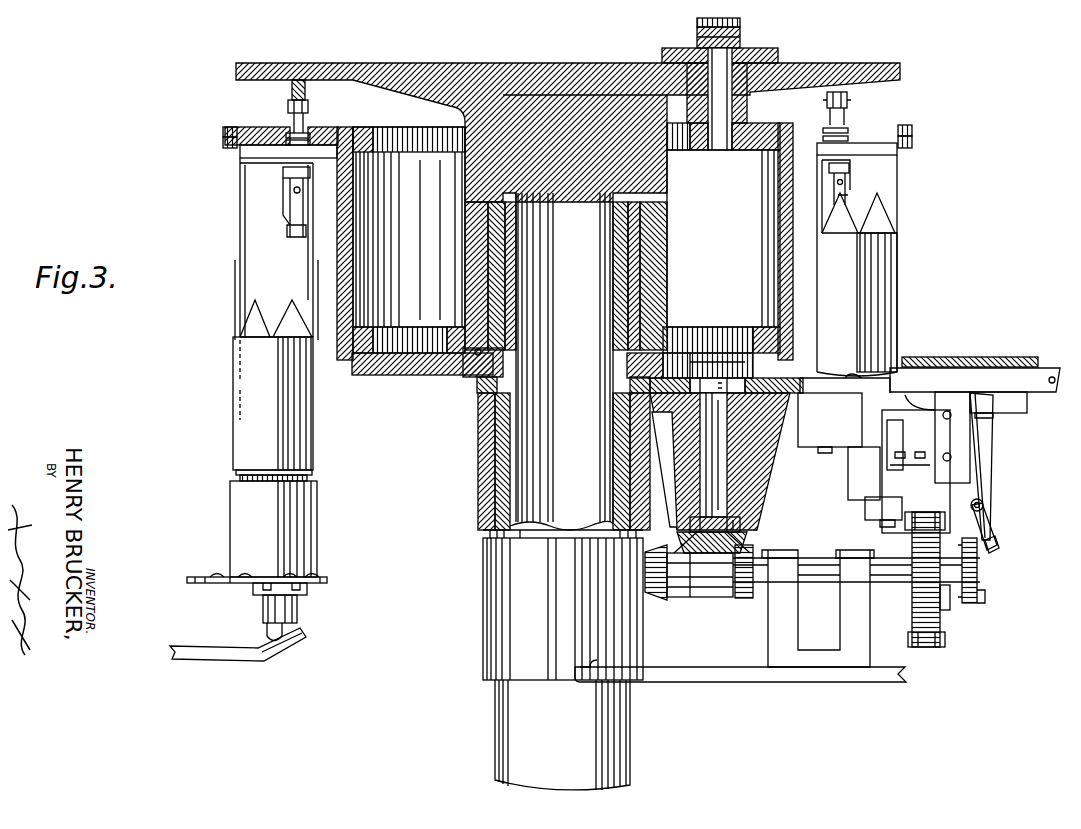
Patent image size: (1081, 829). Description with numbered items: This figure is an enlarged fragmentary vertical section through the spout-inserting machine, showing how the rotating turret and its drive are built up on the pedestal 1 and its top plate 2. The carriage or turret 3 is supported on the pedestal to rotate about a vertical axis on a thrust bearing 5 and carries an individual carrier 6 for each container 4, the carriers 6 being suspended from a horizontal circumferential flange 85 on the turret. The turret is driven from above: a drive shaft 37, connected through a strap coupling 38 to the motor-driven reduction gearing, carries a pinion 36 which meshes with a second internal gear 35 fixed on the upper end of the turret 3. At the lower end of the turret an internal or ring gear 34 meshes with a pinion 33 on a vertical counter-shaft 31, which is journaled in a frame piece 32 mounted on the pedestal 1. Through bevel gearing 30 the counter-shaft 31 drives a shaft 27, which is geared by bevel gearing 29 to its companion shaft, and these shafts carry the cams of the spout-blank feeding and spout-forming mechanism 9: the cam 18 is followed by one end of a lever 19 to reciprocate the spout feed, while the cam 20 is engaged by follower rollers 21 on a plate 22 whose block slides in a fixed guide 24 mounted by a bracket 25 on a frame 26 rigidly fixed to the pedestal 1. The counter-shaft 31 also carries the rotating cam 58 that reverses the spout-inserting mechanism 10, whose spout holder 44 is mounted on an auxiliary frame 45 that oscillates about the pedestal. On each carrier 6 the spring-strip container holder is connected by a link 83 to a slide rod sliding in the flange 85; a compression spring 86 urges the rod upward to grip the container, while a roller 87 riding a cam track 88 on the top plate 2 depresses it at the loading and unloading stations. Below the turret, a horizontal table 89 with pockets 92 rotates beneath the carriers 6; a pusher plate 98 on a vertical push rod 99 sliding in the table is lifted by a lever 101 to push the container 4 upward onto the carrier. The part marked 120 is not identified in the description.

The pedestal 1 is at (503, 716).
The top plate 2 is at (462, 78).
The carriage or turret 3 is at (332, 216).
The container 4 is at (238, 455).
The thrust bearing 5 is at (475, 372).
The carrier 6 is at (238, 301).
The spout-blank feeding and spout-forming mechanism 9 is at (1001, 444).
The spout-inserting mechanism 10 is at (839, 473).
The cam 18 is at (972, 562).
The lever 19 is at (993, 530).
The cam 20 is at (930, 604).
The follower rollers 21 is at (915, 522).
The plate 22 is at (950, 598).
The fixed guide 24 is at (958, 467).
The bracket 25 is at (960, 356).
The frame 26 is at (718, 670).
The shaft 27 is at (903, 583).
The bevel gearing 29 is at (680, 598).
The bevel gearing 30 is at (748, 547).
The vertical counter-shaft 31 is at (714, 497).
The frame piece 32 is at (483, 480).
The pinion 33 is at (704, 350).
The internal or ring gear 34 is at (408, 378).
The second internal gear 35 is at (395, 112).
The pinion 36 is at (742, 140).
The drive shaft 37 is at (748, 58).
The strap coupling 38 is at (695, 32).
The spout holder 44 is at (828, 425).
The auxiliary frame 45 is at (662, 420).
The rotating cam 58 is at (735, 400).
The link 83 is at (298, 238).
The horizontal circumferential flange 85 is at (235, 136).
The compression spring 86 is at (282, 133).
The roller 87 is at (308, 112).
The cam track 88 is at (306, 88).
The horizontal table 89 is at (327, 581).
The pocket 92 is at (242, 530).
The pusher plate 98 is at (258, 480).
The push rod 99 is at (265, 628).
The lever 101 is at (300, 640).
The clamp 120 is at (225, 142).